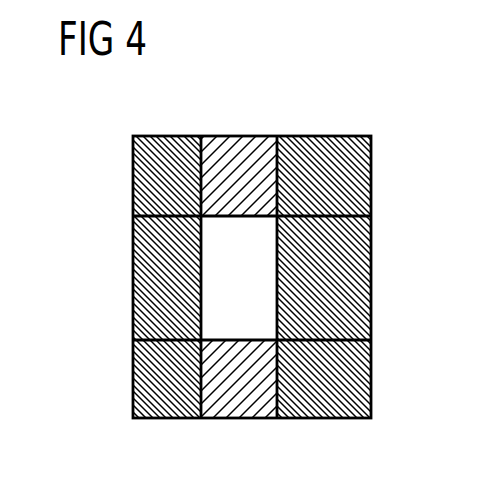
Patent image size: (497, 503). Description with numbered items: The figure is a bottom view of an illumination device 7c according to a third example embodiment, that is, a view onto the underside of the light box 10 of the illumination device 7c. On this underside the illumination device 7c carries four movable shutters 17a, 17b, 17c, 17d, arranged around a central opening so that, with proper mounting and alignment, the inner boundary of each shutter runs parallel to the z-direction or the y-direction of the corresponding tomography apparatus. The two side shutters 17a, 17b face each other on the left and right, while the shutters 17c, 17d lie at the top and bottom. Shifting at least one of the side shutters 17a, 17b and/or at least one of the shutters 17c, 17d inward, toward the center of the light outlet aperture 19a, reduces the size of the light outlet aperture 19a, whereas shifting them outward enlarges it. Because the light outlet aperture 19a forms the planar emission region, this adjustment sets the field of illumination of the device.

The light box 10 is at (252, 223).
The illumination device 7c is at (330, 88).
The movable shutter 17a is at (357, 270).
The movable shutter 17b is at (140, 258).
The movable shutter 17c is at (250, 137).
The movable shutter 17d is at (242, 407).
The light outlet aperture 19a is at (218, 292).